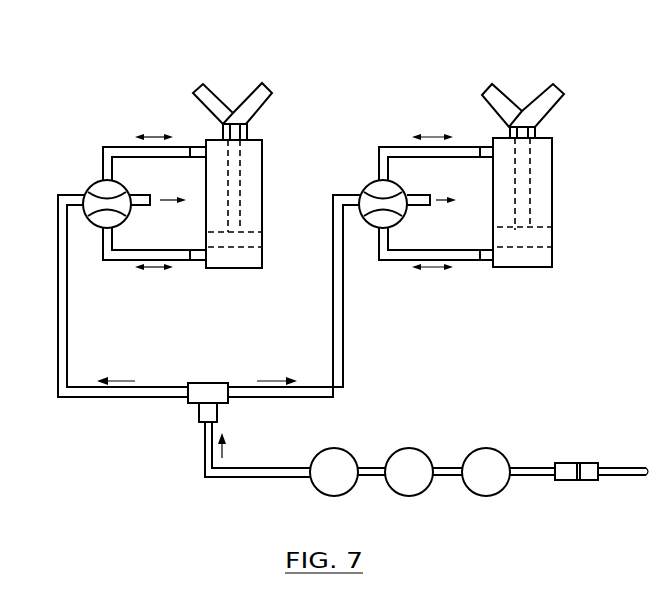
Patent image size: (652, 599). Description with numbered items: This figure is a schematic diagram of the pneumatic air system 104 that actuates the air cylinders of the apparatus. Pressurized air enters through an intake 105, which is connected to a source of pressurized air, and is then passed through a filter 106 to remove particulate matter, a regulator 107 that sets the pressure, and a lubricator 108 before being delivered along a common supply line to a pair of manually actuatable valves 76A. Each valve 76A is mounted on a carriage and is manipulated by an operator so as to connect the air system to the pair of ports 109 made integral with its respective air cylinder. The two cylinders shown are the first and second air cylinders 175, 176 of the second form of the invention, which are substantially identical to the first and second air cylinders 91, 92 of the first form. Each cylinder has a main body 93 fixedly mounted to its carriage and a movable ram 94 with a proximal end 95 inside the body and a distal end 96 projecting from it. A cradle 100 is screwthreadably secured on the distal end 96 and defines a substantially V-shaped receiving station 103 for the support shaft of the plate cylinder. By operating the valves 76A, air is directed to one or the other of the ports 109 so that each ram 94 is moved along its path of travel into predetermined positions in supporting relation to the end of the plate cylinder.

The manually actuatable valve 76A is at (100, 181).
The first air cylinder 91 is at (552, 205).
The second air cylinder 92 is at (262, 188).
The main body 93 is at (262, 208).
The movable ram 94 is at (235, 175).
The proximal end 95 is at (238, 227).
The distal end 96 is at (238, 149).
The cradle 100 is at (263, 92).
The V-shaped receiving station 103 is at (217, 92).
The pneumatic air system 104 is at (353, 303).
The intake 105 is at (632, 478).
The filter 106 is at (485, 496).
The regulator 107 is at (402, 496).
The lubricator 108 is at (340, 494).
The port 109 is at (200, 157).
The first air cylinder 175 is at (525, 166).
The second air cylinder 176 is at (236, 171).